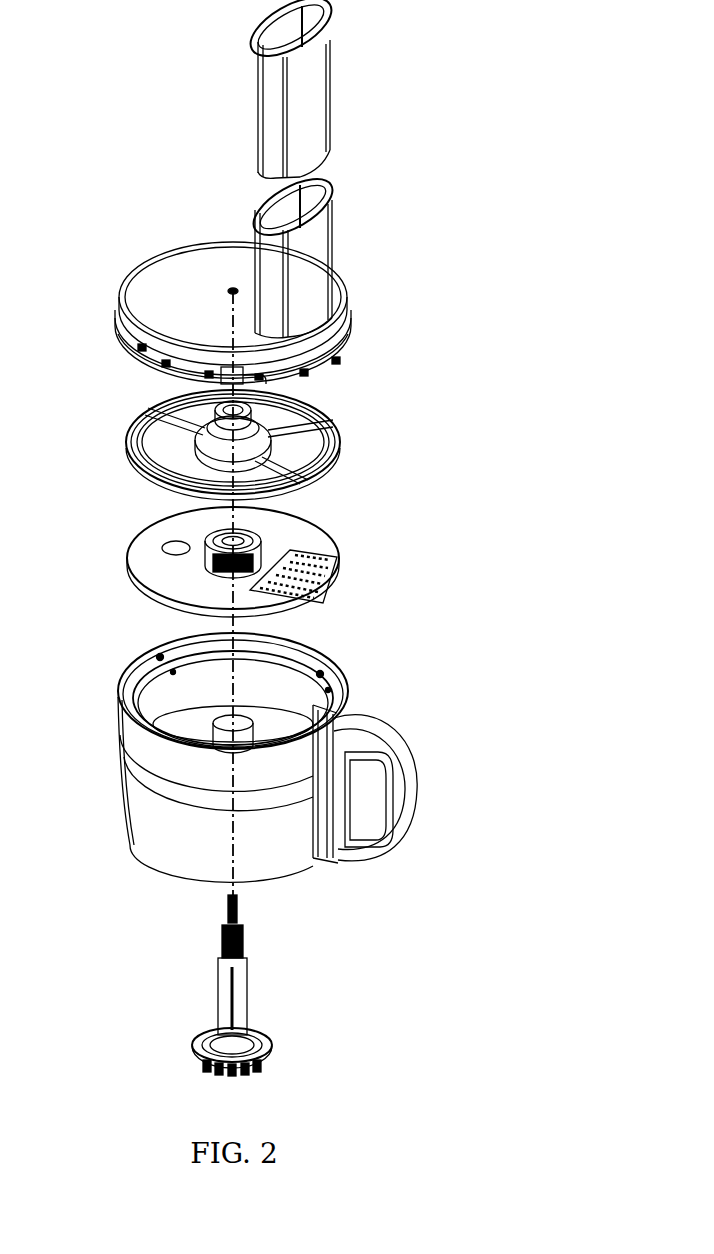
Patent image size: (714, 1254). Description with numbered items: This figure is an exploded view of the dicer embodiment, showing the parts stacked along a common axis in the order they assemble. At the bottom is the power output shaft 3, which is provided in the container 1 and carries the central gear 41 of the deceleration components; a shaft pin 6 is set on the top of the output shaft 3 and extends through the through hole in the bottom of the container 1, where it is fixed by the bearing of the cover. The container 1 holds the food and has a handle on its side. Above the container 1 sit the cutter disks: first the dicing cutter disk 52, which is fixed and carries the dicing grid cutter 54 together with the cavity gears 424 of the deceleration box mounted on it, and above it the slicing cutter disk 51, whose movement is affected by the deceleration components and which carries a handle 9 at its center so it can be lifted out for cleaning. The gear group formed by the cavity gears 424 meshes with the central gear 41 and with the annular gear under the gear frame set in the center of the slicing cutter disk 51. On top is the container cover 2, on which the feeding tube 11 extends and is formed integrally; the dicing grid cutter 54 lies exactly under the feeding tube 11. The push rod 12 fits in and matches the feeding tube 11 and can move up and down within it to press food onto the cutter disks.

The container 1 is at (182, 828).
The container cover 2 is at (180, 285).
The power output shaft 3 is at (233, 997).
The shaft pin 6 is at (238, 913).
The handle 9 is at (206, 412).
The feeding tube 11 is at (310, 257).
The push rod 12 is at (305, 105).
The central gear 41 is at (245, 943).
The slicing cutter disk 51 is at (273, 413).
The dicing cutter disk 52 is at (293, 533).
The dicing grid cutter 54 is at (338, 563).
The cavity gears 424 is at (222, 574).